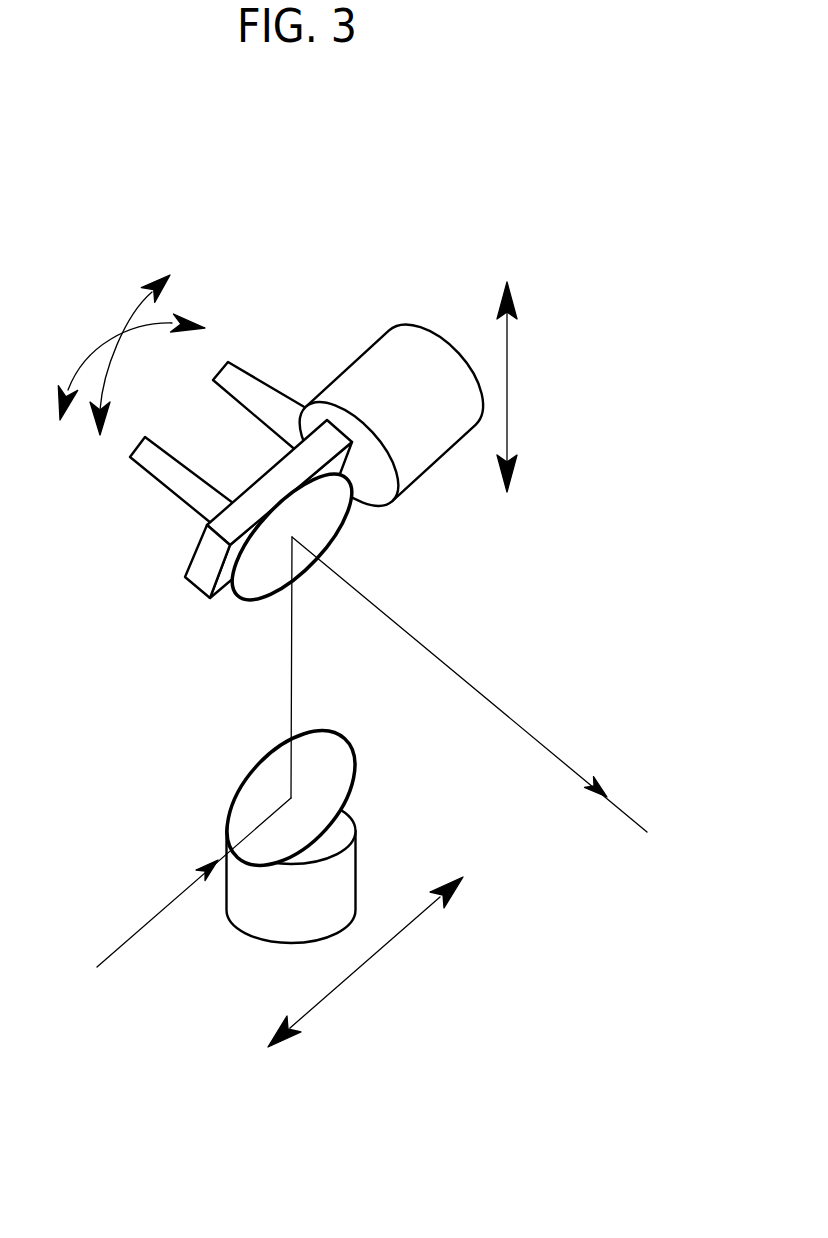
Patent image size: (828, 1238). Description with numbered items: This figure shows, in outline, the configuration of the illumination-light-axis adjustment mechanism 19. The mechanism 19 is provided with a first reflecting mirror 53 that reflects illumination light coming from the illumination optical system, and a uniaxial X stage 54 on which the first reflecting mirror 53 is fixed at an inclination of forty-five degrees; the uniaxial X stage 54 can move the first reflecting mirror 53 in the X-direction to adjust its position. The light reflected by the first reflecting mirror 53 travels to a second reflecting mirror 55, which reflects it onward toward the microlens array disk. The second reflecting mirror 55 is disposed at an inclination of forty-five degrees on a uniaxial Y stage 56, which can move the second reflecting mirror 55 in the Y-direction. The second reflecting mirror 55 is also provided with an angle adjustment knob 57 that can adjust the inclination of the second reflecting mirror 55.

The illumination-light-axis adjustment mechanism 19 is at (369, 611).
The first reflecting mirror 53 is at (260, 780).
The uniaxial X stage 54 is at (357, 851).
The second reflecting mirror 55 is at (317, 523).
The uniaxial Y stage 56 is at (367, 342).
The angle adjustment knob 57 is at (155, 480).